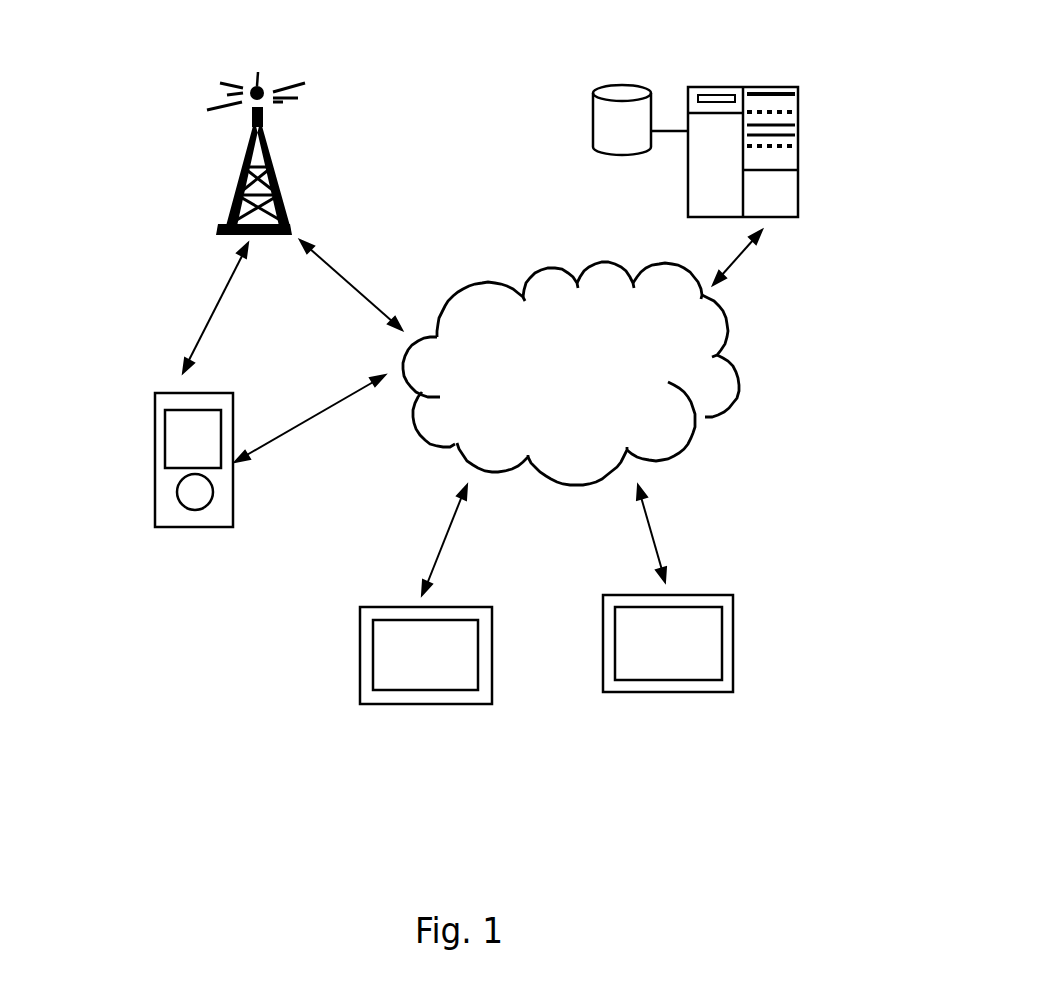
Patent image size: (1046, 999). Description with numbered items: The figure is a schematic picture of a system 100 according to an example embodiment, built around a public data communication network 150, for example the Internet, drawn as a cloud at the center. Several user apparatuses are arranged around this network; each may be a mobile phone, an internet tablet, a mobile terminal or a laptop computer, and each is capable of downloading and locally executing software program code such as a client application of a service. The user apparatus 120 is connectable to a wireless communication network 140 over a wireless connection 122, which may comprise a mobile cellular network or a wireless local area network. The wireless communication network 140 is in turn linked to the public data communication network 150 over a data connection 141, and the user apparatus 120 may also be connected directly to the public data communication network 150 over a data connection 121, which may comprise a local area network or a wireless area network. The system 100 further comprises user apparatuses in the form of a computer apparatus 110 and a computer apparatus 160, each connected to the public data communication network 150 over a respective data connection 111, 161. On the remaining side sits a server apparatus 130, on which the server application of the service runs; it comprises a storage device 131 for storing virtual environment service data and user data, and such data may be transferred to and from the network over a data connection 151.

The system 100 is at (464, 29).
The computer apparatus 110 is at (422, 704).
The data connection 111 is at (443, 557).
The user apparatus 120 is at (233, 495).
The data connection 121 is at (350, 386).
The wireless connection 122 is at (218, 298).
The server apparatus 130 is at (730, 87).
The storage device 131 is at (613, 157).
The wireless communication network 140 is at (247, 146).
The data connection 141 is at (350, 280).
The public data communication network 150 is at (715, 412).
The data connection 151 is at (740, 260).
The computer apparatus 160 is at (663, 692).
The data connection 161 is at (658, 550).